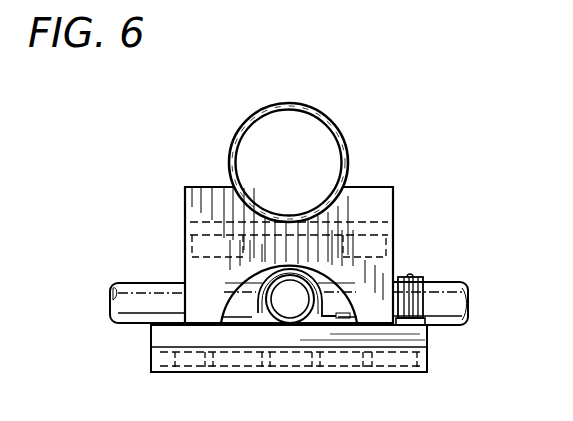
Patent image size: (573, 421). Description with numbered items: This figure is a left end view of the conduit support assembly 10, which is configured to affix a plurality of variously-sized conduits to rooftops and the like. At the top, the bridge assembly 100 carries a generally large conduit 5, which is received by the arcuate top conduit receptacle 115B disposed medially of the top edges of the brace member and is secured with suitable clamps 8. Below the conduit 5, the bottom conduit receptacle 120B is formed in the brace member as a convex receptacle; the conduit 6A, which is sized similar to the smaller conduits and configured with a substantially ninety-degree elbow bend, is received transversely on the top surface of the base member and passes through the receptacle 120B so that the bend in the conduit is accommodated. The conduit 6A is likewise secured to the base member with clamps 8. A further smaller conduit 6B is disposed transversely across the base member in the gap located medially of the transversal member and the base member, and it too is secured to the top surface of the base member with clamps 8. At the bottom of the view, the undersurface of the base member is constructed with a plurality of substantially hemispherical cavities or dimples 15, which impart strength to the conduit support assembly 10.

The conduit 5 is at (327, 118).
The top conduit receptacle 115B is at (331, 205).
The conduit support assembly 10 is at (423, 217).
The bridge assembly 100 is at (183, 196).
The bottom conduit receptacle 120B is at (226, 270).
The clamps 8 is at (418, 272).
The conduit 6A is at (457, 298).
The conduit 6B is at (120, 305).
The hemispherical cavities or dimples 15 is at (380, 363).